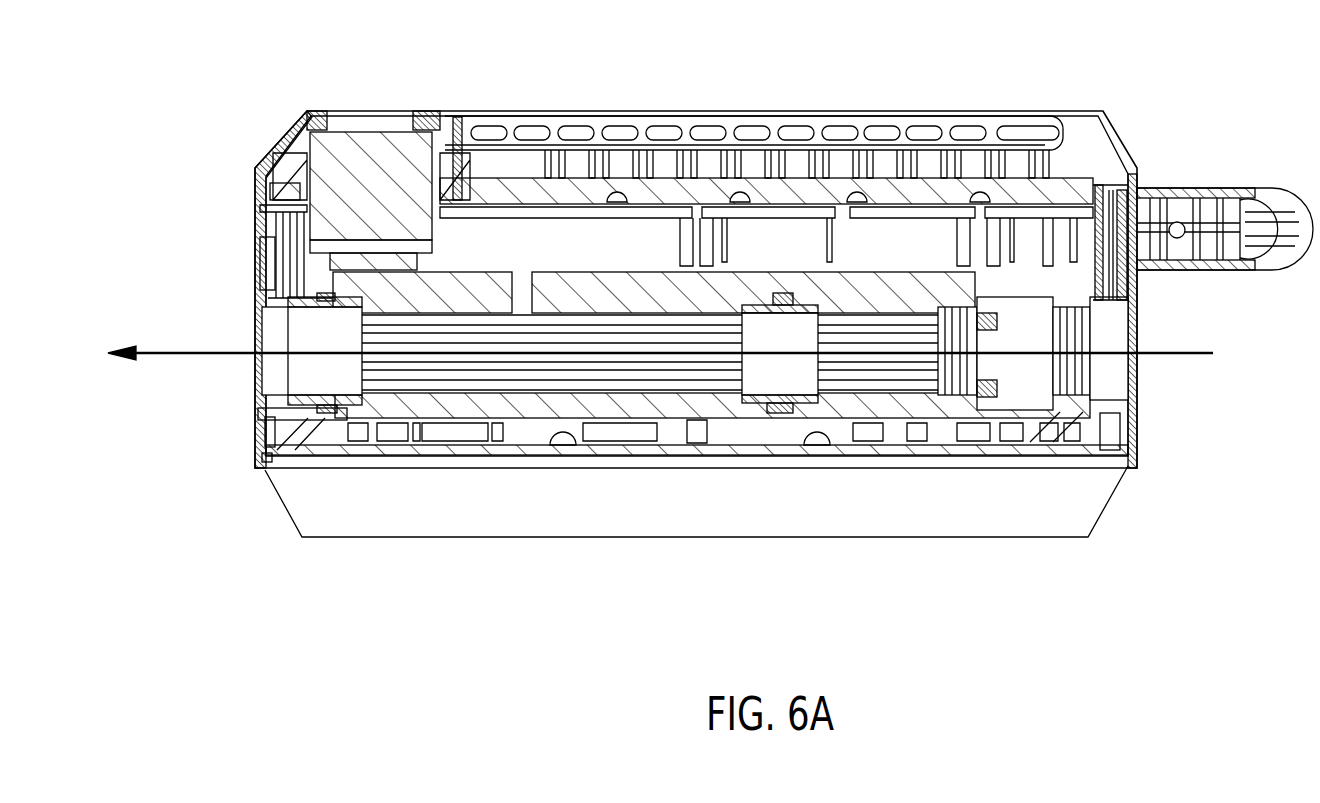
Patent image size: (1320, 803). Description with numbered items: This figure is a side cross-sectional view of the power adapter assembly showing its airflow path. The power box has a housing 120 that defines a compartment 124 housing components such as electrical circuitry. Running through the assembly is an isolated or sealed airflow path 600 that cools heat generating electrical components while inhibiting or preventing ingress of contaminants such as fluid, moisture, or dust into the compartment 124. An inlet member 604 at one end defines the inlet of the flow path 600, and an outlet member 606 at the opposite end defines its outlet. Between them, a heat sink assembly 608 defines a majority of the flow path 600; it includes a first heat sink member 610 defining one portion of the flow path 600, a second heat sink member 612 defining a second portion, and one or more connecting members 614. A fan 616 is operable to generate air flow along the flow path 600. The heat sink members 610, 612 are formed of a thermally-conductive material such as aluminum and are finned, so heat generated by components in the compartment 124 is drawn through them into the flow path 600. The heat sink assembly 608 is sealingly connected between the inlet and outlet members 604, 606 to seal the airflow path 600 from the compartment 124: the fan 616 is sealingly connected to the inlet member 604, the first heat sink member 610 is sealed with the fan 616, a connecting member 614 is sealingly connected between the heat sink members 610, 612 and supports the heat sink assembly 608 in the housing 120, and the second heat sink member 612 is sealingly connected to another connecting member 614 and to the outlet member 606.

The airflow path 600 is at (197, 352).
The housing 120 is at (1130, 440).
The compartment 124 is at (622, 237).
The inlet member 604 is at (1130, 294).
The outlet member 606 is at (262, 423).
The heat sink assembly 608 is at (630, 445).
The first heat sink member 610 is at (877, 283).
The second heat sink member 612 is at (505, 280).
The connecting member 614 is at (328, 433).
The fan 616 is at (1023, 423).